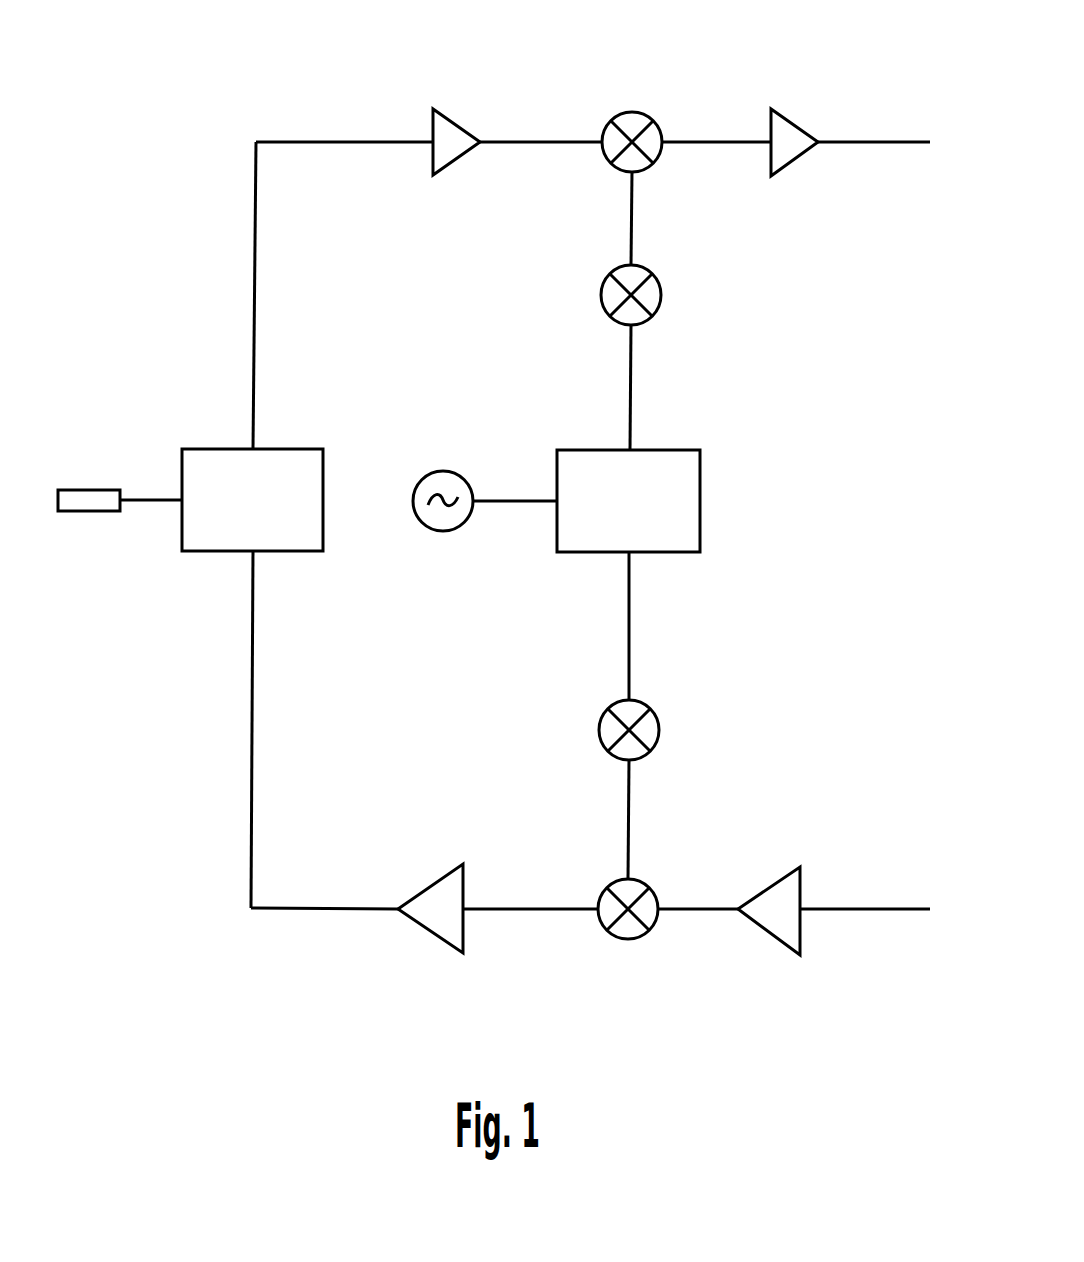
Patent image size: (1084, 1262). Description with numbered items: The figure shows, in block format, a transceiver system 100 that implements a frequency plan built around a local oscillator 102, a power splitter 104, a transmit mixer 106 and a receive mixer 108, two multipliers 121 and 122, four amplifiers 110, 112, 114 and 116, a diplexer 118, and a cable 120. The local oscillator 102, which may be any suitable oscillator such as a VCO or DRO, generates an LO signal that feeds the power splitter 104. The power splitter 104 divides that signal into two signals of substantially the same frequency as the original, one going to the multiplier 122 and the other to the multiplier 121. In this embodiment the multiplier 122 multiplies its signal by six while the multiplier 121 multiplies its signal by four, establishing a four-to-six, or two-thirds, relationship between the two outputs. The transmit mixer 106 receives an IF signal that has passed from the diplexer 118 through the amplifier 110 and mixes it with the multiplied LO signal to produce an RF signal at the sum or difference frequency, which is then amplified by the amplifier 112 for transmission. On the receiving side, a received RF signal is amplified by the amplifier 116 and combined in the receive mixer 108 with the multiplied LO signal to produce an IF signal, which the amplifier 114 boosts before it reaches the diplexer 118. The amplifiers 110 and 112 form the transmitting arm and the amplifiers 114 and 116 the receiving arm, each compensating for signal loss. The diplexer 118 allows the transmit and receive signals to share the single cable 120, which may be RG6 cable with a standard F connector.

The transceiver system 100 is at (243, 74).
The local oscillator 102 is at (451, 473).
The power splitter 104 is at (703, 474).
The transmit mixer 106 is at (636, 113).
The receive mixer 108 is at (610, 886).
The amplifier 110 is at (452, 120).
The amplifier 112 is at (778, 114).
The amplifier 114 is at (445, 878).
The amplifier 116 is at (768, 887).
The diplexer 118 is at (287, 450).
The cable 120 is at (119, 489).
The multiplier 121 is at (647, 709).
The multiplier 122 is at (648, 271).